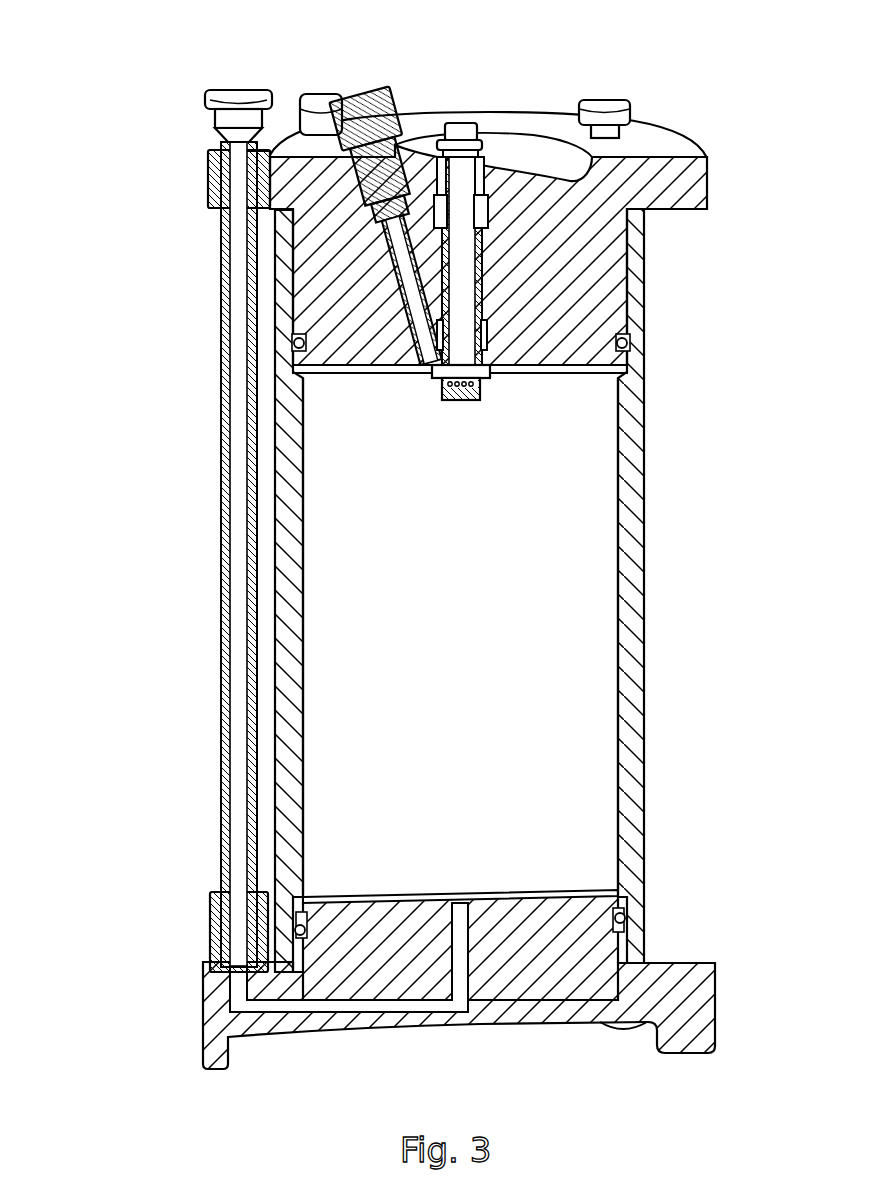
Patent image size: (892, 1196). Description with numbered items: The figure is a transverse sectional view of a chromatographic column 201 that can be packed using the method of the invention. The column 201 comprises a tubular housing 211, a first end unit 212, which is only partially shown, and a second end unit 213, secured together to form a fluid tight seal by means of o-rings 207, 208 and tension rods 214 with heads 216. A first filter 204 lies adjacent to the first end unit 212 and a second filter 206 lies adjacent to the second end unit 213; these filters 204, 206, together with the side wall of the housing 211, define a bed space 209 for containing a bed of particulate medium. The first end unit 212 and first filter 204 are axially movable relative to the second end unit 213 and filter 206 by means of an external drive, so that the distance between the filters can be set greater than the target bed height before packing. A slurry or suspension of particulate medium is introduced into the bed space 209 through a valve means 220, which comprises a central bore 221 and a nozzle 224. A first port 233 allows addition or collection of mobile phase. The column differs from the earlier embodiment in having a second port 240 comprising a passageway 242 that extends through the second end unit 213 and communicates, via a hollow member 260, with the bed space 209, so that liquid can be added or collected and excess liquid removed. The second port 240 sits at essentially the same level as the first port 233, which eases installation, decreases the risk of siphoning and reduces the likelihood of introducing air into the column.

The column 201 is at (184, 530).
The first filter 204 is at (562, 373).
The second filter 206 is at (622, 890).
The o-ring 207 is at (294, 340).
The o-ring 208 is at (296, 930).
The bed space 209 is at (484, 587).
The tubular housing 211 is at (641, 580).
The first end unit 212 is at (608, 297).
The second end unit 213 is at (680, 975).
The tension rod 214 is at (308, 96).
The head 216 is at (605, 99).
The valve means 220 is at (462, 122).
The central bore 221 is at (478, 180).
The nozzle 224 is at (461, 401).
The first port 233 is at (366, 97).
The second port 240 is at (240, 90).
The passageway 242 is at (470, 1000).
The hollow member 260 is at (226, 818).